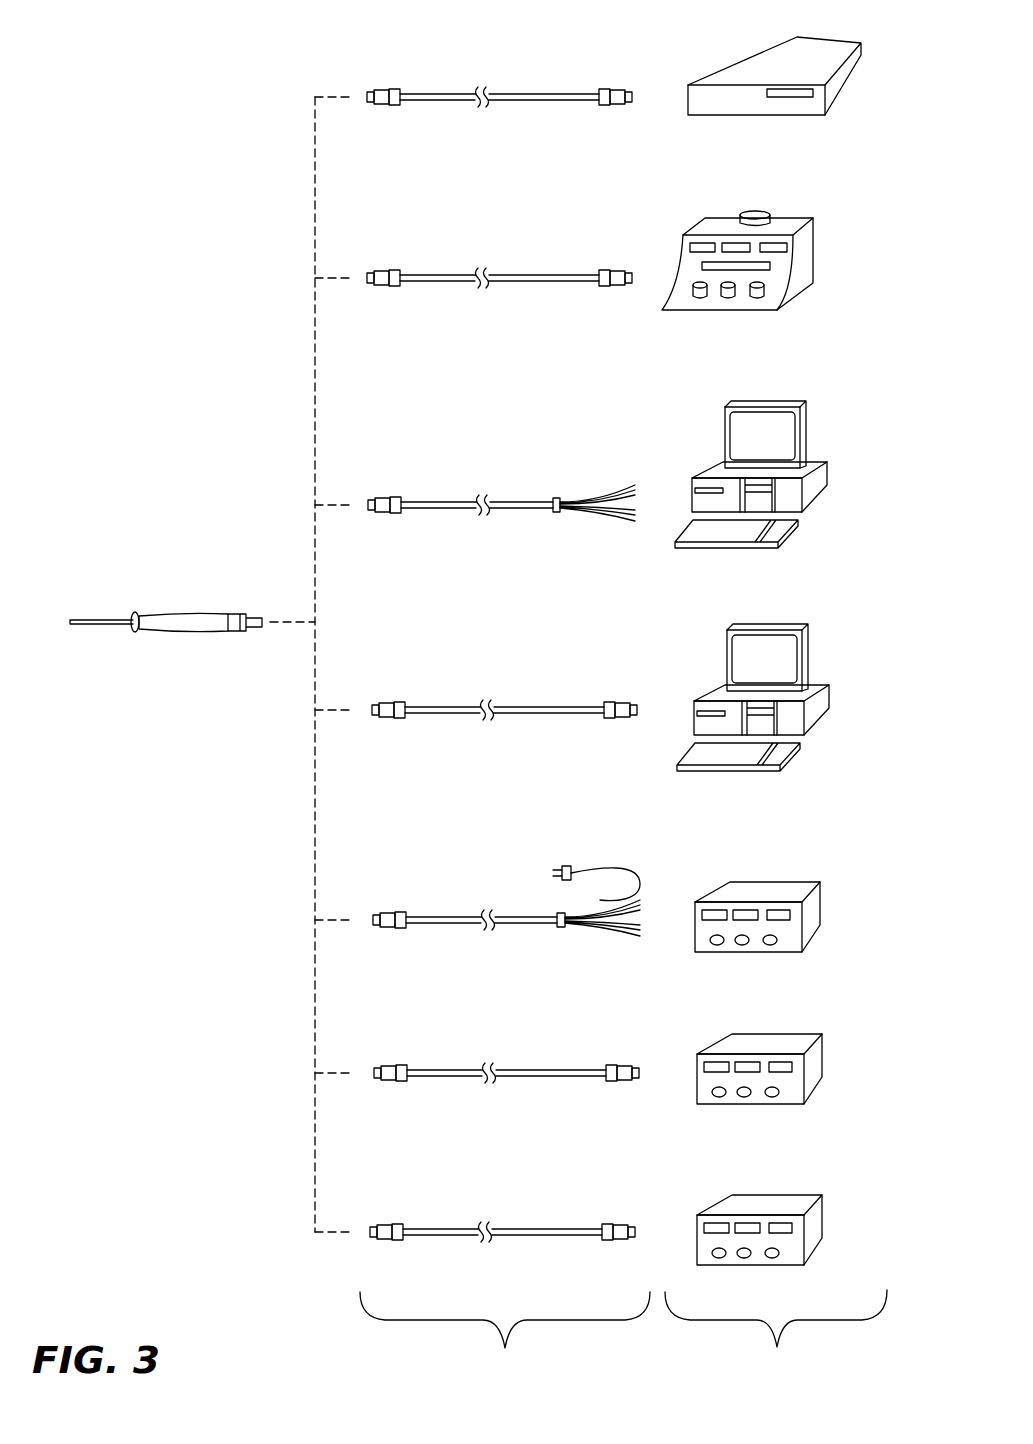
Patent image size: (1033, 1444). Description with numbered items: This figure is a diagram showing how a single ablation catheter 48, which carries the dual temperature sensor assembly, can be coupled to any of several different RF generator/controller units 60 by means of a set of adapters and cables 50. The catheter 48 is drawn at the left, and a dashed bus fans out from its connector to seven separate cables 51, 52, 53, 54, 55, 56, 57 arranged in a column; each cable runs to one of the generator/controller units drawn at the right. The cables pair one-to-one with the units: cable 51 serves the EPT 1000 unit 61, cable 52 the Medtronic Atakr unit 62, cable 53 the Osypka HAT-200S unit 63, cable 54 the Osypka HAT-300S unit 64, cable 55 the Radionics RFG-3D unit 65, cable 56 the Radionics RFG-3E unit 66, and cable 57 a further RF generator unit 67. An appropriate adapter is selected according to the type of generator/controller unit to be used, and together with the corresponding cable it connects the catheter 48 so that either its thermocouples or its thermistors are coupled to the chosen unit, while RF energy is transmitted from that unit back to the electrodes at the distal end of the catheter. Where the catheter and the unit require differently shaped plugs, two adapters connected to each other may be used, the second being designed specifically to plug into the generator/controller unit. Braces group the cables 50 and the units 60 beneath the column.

The ablation catheter 48 is at (170, 615).
The adapters and cables 50 is at (505, 1340).
The cable 51 is at (515, 95).
The cable 52 is at (518, 278).
The cable 53 is at (512, 503).
The cable 54 is at (512, 708).
The cable 55 is at (518, 918).
The cable 56 is at (515, 1072).
The cable 57 is at (515, 1232).
The RF generator/controller units 60 is at (776, 1339).
The RF generator/controller unit 61 is at (785, 117).
The RF generator/controller unit 62 is at (818, 245).
The RF generator/controller unit 63 is at (806, 425).
The RF generator/controller unit 64 is at (808, 648).
The RF generator/controller unit 65 is at (820, 928).
The RF generator/controller unit 66 is at (822, 1040).
The RF generator/controller unit 67 is at (821, 1222).